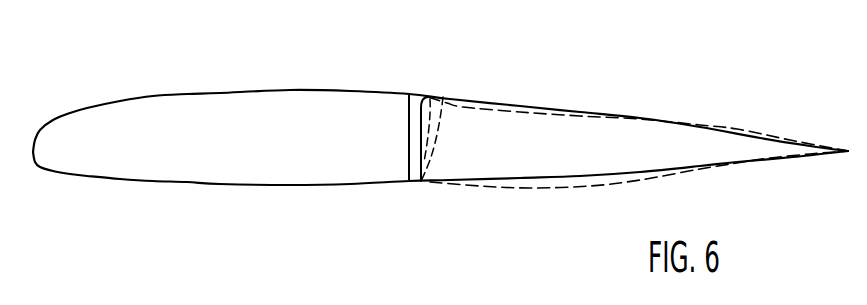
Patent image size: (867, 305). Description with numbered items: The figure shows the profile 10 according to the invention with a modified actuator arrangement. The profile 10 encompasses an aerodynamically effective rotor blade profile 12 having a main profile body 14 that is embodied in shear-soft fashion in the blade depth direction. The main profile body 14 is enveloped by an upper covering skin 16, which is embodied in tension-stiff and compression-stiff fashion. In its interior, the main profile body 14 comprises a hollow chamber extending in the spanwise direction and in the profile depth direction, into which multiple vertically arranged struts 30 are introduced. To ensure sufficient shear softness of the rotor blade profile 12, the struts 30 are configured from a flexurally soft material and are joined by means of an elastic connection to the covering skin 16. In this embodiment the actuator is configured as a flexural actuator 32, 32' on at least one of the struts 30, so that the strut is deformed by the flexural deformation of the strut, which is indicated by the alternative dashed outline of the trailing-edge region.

The profile 10 is at (83, 52).
The rotor blade profile 12 is at (263, 88).
The main profile body 14 is at (153, 95).
The upper covering skin 16 is at (213, 184).
The strut 30 is at (413, 152).
The flexural actuator 32 is at (425, 139).
The flexural actuator 32' is at (432, 139).